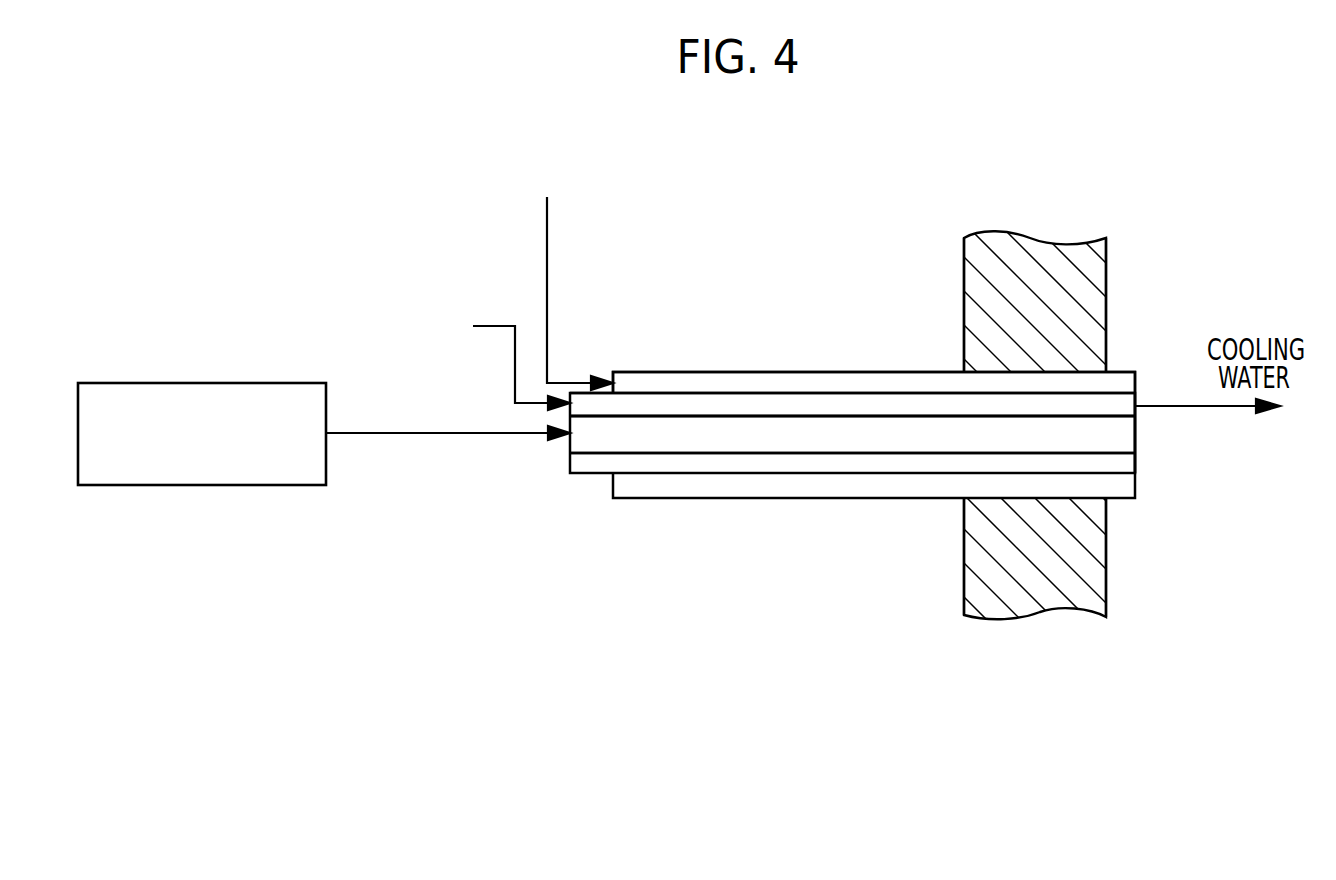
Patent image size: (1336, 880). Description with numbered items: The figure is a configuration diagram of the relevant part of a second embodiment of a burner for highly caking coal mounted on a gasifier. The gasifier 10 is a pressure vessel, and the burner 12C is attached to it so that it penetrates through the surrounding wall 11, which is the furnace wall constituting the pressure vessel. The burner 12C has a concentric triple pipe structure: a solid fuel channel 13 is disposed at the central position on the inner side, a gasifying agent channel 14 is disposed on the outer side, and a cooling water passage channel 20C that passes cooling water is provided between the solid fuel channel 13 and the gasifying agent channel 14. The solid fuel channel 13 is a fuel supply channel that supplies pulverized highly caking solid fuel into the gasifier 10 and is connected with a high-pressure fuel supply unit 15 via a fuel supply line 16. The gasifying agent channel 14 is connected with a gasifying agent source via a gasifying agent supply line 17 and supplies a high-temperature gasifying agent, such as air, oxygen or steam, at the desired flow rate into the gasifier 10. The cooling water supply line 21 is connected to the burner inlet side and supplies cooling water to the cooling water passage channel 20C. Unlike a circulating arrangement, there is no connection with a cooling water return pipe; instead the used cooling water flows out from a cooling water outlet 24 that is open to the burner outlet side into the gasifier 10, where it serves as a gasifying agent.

The gasifier 10 is at (1137, 583).
The surrounding wall 11 is at (964, 583).
The burner 12C is at (778, 352).
The solid fuel channel 13 is at (818, 432).
The gasifying agent channel 14 is at (890, 383).
The high-pressure fuel supply unit 15 is at (245, 383).
The fuel supply line 16 is at (511, 437).
The gasifying agent supply line 17 is at (549, 283).
The cooling water passage channel 20C is at (705, 408).
The cooling water supply line 21 is at (497, 325).
The cooling water outlet 24 is at (1137, 412).